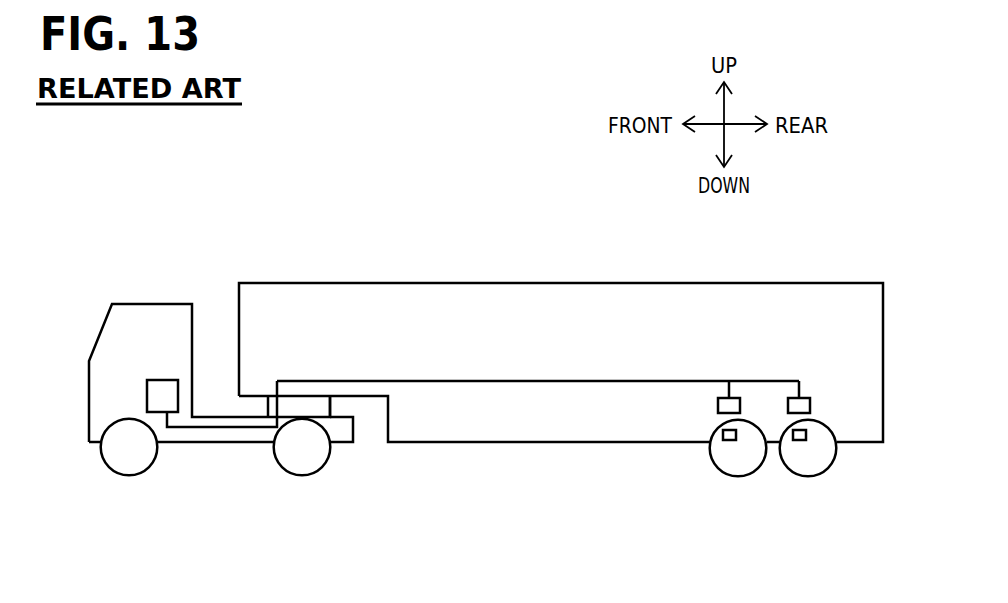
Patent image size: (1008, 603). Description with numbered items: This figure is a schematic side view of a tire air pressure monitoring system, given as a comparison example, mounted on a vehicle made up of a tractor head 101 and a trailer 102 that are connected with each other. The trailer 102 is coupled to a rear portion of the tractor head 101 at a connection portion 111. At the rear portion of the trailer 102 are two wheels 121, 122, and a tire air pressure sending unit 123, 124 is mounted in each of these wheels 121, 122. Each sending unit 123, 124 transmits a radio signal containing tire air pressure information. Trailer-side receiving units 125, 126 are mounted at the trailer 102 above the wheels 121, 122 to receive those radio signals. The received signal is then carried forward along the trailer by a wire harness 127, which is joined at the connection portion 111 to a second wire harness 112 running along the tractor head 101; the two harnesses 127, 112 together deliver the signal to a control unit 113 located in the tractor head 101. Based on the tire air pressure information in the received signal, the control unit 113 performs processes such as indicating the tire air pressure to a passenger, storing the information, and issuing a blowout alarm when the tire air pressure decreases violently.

The tractor head 101 is at (120, 366).
The trailer 102 is at (367, 297).
The connection portion 111 is at (330, 403).
The wire harness 112 is at (208, 427).
The control unit 113 is at (162, 380).
The wheel 121 is at (730, 477).
The wheel 122 is at (833, 477).
The tire air pressure sending unit 123 is at (725, 440).
The tire air pressure sending unit 124 is at (798, 440).
The trailer-side receiving unit 125 is at (737, 398).
The trailer-side receiving unit 126 is at (810, 398).
The wire harness 127 is at (542, 381).